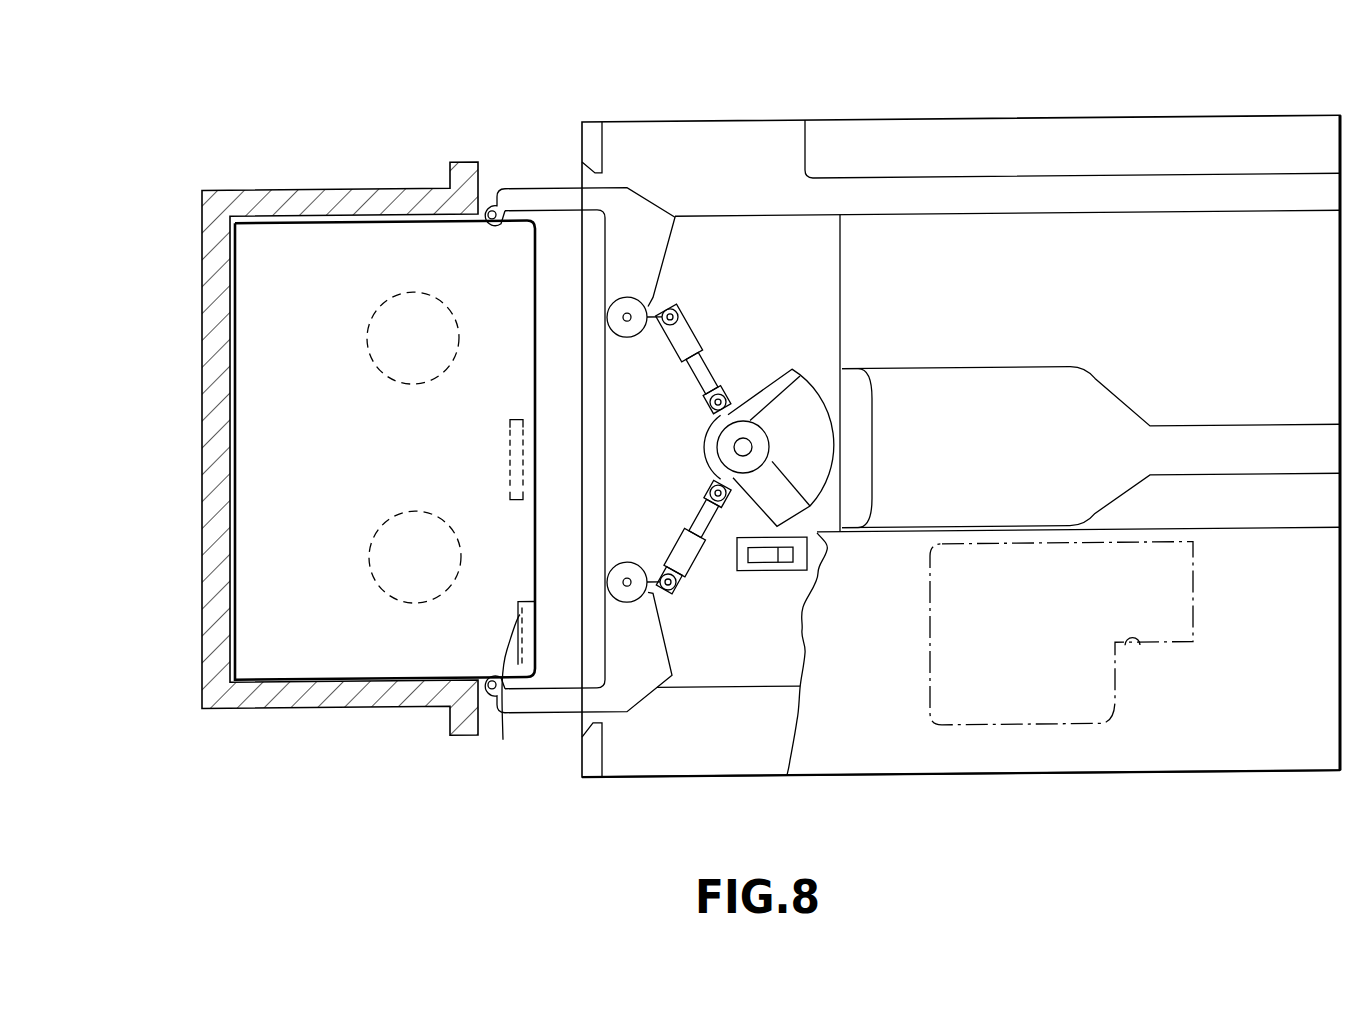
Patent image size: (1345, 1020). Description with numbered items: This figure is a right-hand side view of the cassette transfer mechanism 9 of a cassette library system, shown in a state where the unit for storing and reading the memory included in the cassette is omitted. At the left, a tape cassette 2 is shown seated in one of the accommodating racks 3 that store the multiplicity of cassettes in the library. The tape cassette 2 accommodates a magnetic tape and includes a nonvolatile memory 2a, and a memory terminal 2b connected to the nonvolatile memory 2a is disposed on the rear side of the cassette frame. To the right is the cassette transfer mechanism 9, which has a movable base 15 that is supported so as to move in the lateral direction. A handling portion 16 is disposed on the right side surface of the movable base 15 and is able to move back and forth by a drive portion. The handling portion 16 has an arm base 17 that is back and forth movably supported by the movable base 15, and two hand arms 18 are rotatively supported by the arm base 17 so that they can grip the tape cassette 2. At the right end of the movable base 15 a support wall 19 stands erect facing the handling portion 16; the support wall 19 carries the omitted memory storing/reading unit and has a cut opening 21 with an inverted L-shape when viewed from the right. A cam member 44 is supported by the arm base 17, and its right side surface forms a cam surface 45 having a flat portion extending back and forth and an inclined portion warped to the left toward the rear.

The tape cassette 2 is at (323, 234).
The nonvolatile memory 2a is at (607, 436).
The memory terminal 2b is at (503, 740).
The accommodating rack 3 is at (312, 690).
The cassette transfer mechanism 9 is at (1053, 113).
The movable base 15 is at (1150, 155).
The handling portion 16 is at (727, 230).
The arm base 17 is at (807, 289).
The hand arm 18 is at (627, 209).
The support wall 19 is at (1013, 755).
The cut opening 21 is at (1138, 652).
The cam member 44 is at (737, 573).
The cam surface 45 is at (767, 564).